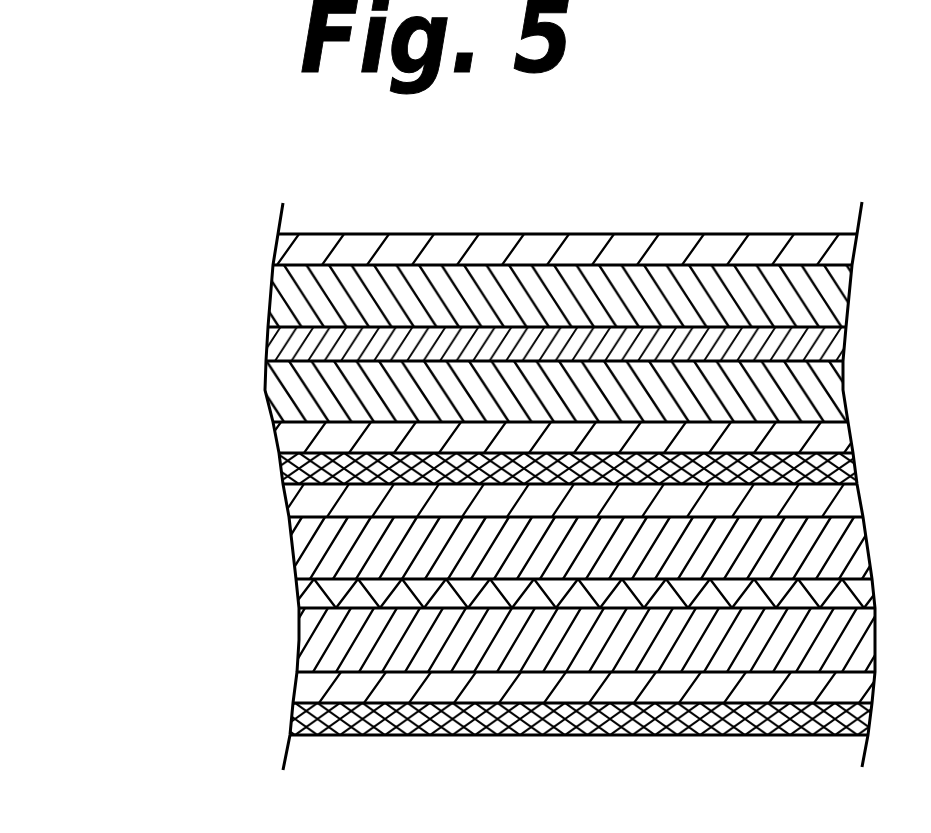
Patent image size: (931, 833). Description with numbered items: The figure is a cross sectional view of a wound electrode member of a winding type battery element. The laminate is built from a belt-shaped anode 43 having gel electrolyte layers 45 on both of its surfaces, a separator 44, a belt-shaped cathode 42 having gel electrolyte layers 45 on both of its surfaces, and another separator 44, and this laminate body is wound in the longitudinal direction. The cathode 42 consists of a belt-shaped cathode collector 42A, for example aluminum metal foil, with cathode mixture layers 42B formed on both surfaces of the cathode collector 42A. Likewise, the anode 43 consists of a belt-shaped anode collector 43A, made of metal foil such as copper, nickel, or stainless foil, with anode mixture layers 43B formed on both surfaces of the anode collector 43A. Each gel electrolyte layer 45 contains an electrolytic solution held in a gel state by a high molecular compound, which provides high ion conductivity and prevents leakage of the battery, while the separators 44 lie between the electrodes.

The cathode 42 is at (450, 606).
The cathode collector 42A is at (297, 595).
The cathode mixture layers 42B is at (296, 547).
The anode 43 is at (438, 339).
The anode collector 43A is at (268, 343).
The anode mixture layers 43B is at (273, 297).
The separator 44 is at (283, 470).
The gel electrolyte layer 45 is at (273, 243).